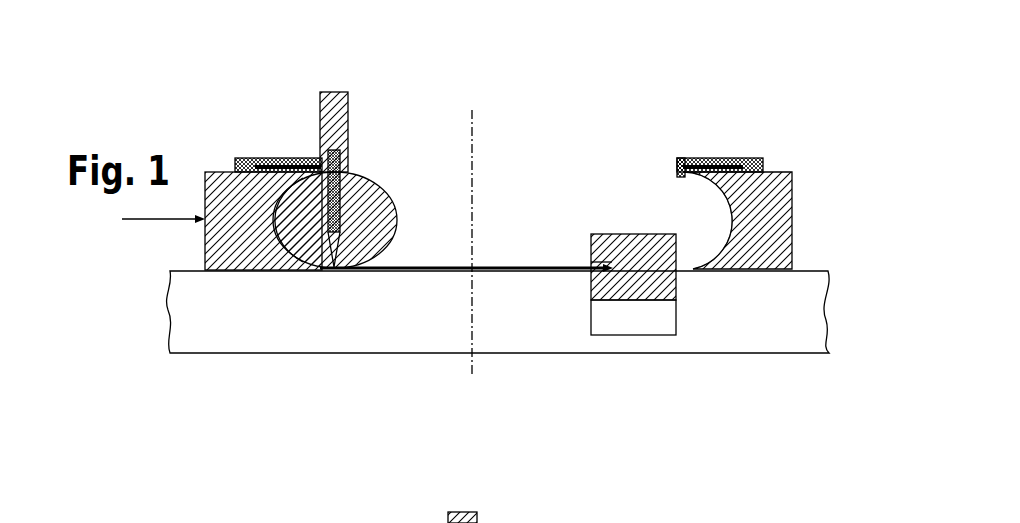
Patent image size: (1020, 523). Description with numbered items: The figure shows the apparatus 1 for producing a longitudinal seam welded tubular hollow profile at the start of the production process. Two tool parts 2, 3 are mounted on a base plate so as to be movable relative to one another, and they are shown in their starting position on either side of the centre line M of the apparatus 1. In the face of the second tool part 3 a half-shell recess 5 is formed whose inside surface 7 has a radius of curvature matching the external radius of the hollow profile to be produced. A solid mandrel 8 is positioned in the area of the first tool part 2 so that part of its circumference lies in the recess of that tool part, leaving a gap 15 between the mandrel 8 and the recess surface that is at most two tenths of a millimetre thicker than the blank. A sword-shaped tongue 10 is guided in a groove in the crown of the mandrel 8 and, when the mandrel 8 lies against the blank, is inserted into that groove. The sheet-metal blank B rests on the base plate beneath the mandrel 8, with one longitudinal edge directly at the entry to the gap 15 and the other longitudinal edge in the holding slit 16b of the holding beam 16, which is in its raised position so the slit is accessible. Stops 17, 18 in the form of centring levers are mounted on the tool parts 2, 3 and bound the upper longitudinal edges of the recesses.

The apparatus 1 is at (232, 75).
The first tool part 2 is at (223, 200).
The second tool part 3 is at (775, 178).
The half-shell recess 5 is at (727, 217).
The inside surface 7 is at (692, 204).
The mandrel 8 is at (367, 195).
The tongue 10 is at (287, 271).
The gap 15 is at (283, 192).
The holding beam 16 is at (653, 273).
The holding slit 16b is at (613, 263).
The stop 17 is at (320, 158).
The stop 18 is at (679, 170).
The sheet-metal blank B is at (510, 265).
The centre line M is at (473, 229).